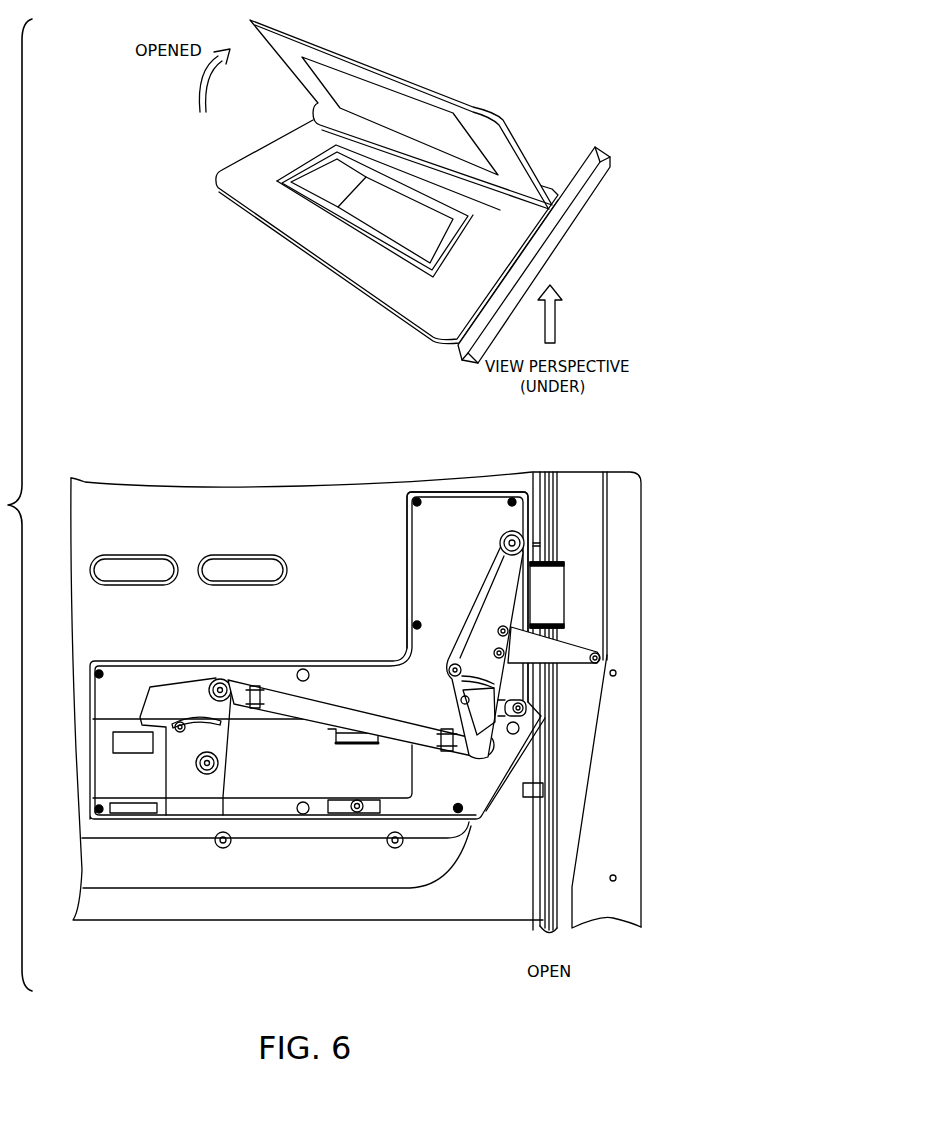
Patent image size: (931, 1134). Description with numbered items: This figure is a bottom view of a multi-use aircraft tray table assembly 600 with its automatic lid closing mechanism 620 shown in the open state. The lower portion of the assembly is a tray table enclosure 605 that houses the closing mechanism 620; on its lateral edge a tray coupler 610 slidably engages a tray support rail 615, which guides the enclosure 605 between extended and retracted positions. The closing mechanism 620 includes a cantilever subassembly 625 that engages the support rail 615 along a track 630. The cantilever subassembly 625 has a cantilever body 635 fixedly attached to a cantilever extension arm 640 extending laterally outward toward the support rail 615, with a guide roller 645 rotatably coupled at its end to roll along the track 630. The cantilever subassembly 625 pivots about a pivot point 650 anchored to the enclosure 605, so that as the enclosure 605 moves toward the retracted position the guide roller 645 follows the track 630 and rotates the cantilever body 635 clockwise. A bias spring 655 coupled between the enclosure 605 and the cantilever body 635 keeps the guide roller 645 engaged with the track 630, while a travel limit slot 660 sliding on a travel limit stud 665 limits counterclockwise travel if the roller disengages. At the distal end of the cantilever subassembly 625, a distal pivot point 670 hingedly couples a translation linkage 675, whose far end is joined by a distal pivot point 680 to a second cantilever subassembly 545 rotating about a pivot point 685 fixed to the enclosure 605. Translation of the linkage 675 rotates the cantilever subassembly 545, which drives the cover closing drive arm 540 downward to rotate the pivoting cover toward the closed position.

The multi-use aircraft tray table assembly 600 is at (144, 461).
The tray table enclosure 605 is at (292, 533).
The tray coupler 610 is at (558, 565).
The tray support rail 615 is at (637, 797).
The automatic lid closing mechanism 620 is at (348, 626).
The cantilever subassembly 625 is at (462, 596).
The track 630 is at (607, 600).
The cantilever body 635 is at (463, 647).
The cantilever extension arm 640 is at (565, 667).
The guide roller 645 is at (601, 659).
The pivot point 650 is at (503, 538).
The bias spring 655 is at (507, 705).
The travel limit slot 660 is at (460, 699).
The travel limit stud 665 is at (448, 672).
The distal pivot point 670 is at (480, 757).
The translation linkage 675 is at (337, 697).
The distal pivot point 680 is at (217, 680).
The pivot point 685 is at (220, 763).
The cover closing drive arm 540 is at (132, 732).
The cantilever subassembly 545 is at (178, 690).